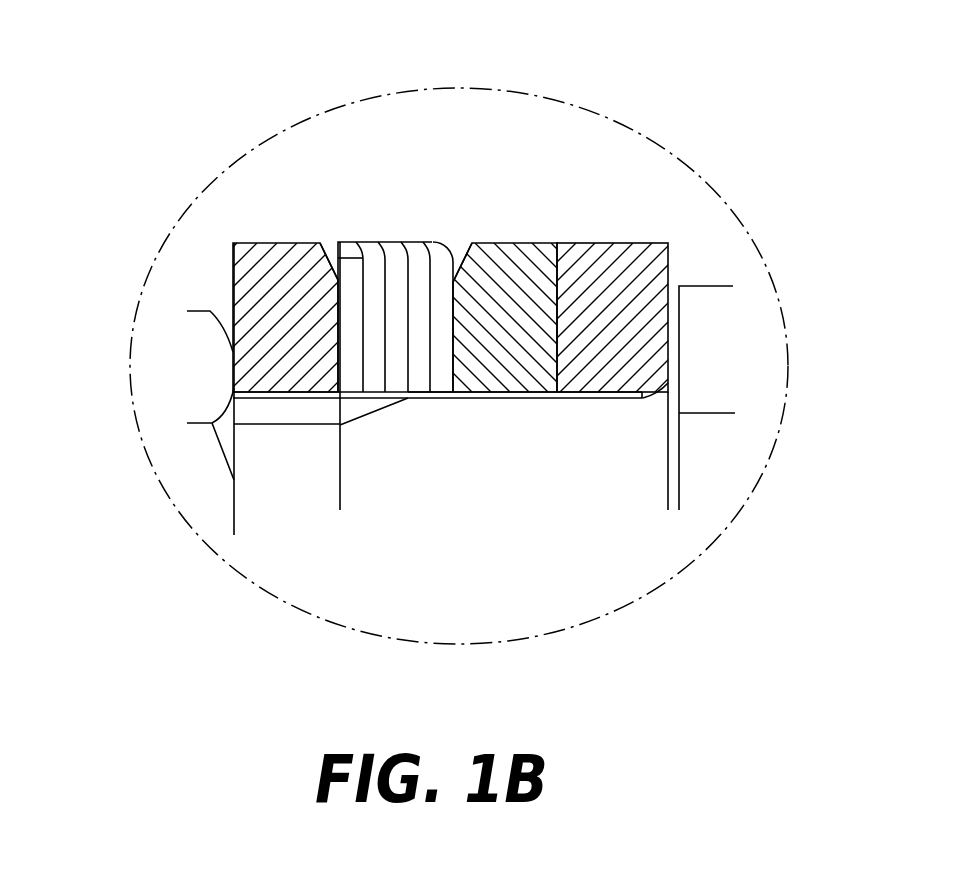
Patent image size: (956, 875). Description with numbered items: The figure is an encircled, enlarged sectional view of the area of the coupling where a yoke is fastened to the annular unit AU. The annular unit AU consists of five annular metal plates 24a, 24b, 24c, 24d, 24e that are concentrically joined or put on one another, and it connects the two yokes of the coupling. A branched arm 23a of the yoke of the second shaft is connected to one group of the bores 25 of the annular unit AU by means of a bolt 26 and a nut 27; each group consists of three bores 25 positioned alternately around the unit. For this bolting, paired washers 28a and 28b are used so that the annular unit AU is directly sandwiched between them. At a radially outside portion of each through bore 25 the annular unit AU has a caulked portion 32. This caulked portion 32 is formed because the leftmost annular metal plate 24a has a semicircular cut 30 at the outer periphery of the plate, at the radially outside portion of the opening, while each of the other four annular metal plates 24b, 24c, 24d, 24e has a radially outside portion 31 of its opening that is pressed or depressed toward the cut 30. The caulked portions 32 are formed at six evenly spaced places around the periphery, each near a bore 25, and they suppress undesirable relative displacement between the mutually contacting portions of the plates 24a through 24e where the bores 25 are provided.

The annular unit AU is at (377, 226).
The branched arm 23a is at (650, 270).
The leftmost annular metal plate 24a is at (352, 292).
The annular metal plate 24b is at (373, 385).
The annular metal plate 24c is at (395, 378).
The annular metal plate 24d is at (428, 385).
The annular metal plate 24e is at (445, 383).
The bore 25 is at (415, 386).
The bolt 26 is at (736, 307).
The nut 27 is at (217, 342).
The washer 28a is at (280, 262).
The washer 28b is at (517, 260).
The semicircular cut 30 is at (343, 242).
The radially outside portion 31 is at (433, 242).
The caulked portion 32 is at (462, 236).